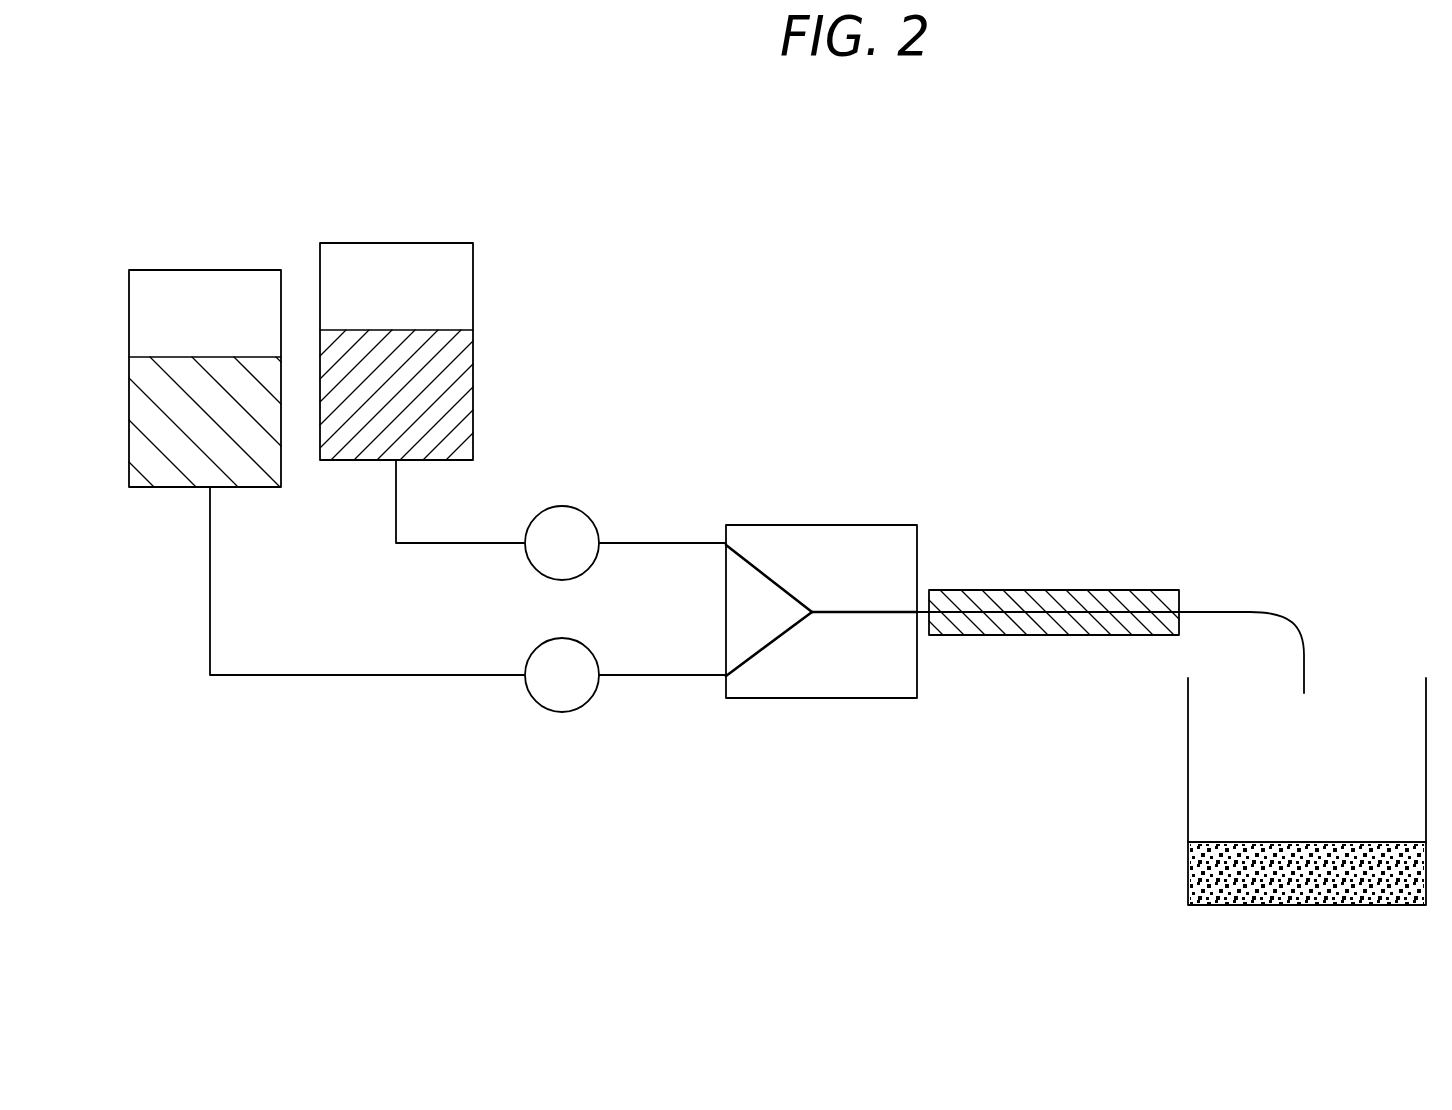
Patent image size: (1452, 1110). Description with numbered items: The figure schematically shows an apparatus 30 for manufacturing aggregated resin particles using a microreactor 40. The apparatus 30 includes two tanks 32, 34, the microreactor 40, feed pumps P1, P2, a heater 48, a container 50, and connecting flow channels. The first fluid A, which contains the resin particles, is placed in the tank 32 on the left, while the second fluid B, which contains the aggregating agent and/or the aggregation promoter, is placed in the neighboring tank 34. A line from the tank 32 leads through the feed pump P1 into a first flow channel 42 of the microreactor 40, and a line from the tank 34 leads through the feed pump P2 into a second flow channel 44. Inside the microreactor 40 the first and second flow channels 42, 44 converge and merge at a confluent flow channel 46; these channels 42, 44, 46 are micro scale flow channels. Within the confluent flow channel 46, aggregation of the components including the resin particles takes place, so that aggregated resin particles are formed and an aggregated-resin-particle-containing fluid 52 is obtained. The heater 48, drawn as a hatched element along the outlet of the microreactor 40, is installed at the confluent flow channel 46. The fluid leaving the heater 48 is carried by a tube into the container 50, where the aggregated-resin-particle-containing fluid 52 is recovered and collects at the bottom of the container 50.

The apparatus 30 is at (657, 247).
The tank 32 is at (207, 270).
The tank 34 is at (392, 243).
The first fluid A is at (184, 457).
The second fluid B is at (359, 440).
The feed pump P1 is at (562, 712).
The feed pump P2 is at (563, 506).
The microreactor 40 is at (880, 505).
The first flow channel 42 is at (768, 648).
The second flow channel 44 is at (770, 572).
The confluent flow channel 46 is at (872, 613).
The heater 48 is at (1052, 592).
The container 50 is at (1188, 768).
The aggregated-resin-particle-containing fluid 52 is at (1188, 886).